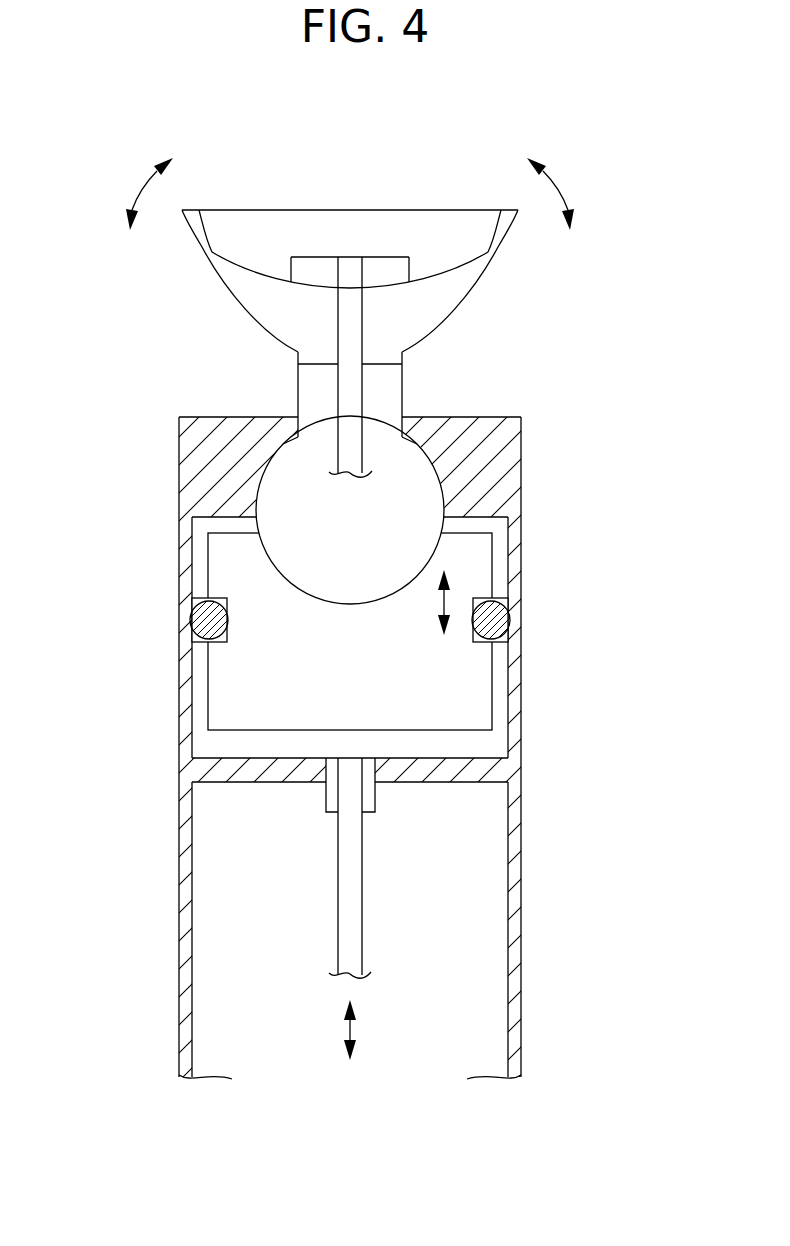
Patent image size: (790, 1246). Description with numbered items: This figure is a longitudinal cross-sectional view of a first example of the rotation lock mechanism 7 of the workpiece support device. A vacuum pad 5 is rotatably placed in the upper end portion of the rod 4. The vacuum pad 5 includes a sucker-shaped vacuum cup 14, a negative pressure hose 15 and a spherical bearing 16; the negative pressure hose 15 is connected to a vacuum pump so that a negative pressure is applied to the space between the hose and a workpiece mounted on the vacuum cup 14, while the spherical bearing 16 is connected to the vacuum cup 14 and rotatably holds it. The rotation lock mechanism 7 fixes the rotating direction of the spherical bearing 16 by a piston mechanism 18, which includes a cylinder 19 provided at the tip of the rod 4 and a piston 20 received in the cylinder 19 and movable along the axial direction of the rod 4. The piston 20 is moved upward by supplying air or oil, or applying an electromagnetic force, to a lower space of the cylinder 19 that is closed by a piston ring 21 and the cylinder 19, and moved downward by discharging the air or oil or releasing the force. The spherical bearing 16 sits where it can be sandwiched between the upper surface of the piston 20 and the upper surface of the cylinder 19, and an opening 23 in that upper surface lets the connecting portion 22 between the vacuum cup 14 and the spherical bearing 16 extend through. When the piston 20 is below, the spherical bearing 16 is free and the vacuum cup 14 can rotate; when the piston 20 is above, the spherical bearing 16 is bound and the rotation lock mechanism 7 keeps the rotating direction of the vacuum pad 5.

The rod 4 is at (543, 923).
The vacuum pad 5 is at (350, 303).
The rotation lock mechanism 7 is at (438, 446).
The vacuum cup 14 is at (297, 208).
The negative pressure hose 15 is at (336, 420).
The spherical bearing 16 is at (430, 505).
The piston mechanism 18 is at (534, 575).
The cylinder 19 is at (522, 640).
The piston 20 is at (478, 717).
The piston ring 21 is at (193, 621).
The connecting portion 22 is at (405, 387).
The opening 23 is at (289, 428).